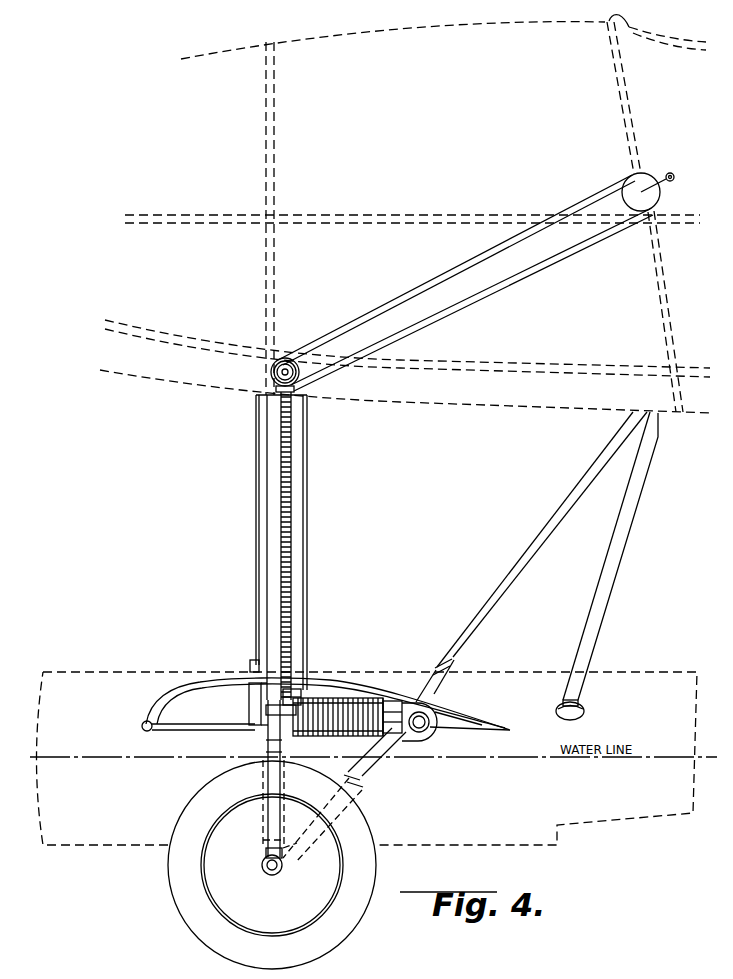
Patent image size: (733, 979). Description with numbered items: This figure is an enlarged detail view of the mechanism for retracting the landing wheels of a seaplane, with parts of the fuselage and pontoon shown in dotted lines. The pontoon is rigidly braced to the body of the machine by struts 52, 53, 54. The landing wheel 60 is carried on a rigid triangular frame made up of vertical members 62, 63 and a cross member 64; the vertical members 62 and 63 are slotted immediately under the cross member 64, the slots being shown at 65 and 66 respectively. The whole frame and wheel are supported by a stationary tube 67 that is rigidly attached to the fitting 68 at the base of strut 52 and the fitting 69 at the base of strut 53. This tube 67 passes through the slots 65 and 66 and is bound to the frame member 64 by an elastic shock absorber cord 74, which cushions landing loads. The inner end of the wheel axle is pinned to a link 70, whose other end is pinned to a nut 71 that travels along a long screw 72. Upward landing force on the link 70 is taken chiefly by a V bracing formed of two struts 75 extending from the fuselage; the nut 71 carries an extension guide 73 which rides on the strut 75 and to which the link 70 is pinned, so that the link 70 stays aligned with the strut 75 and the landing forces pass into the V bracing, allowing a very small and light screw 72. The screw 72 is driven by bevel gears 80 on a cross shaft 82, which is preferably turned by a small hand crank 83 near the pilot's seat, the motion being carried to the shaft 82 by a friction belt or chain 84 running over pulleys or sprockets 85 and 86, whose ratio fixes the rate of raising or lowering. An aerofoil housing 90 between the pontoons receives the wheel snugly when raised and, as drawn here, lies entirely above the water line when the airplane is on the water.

The strut 52 is at (253, 653).
The strut 53 is at (556, 512).
The strut 54 is at (630, 512).
The landing wheel 60 is at (175, 885).
The vertical member 62 is at (284, 783).
The vertical member 63 is at (337, 802).
The cross member 64 is at (393, 702).
The slot 65 is at (277, 752).
The slot 66 is at (380, 744).
The stationary tube 67 is at (340, 730).
The fitting 68 is at (249, 702).
The fitting 69 is at (436, 690).
The link 70 is at (265, 792).
The nut 71 is at (292, 698).
The screw 72 is at (287, 512).
The extension guide 73 is at (284, 689).
The elastic shock absorber cord 74 is at (308, 702).
The strut 75 is at (272, 535).
The bevel gears 80 is at (273, 378).
The cross shaft 82 is at (300, 376).
The hand crank 83 is at (674, 180).
The friction belt or chain 84 is at (557, 258).
The pulley or sprocket 85 is at (631, 192).
The pulley or sprocket 86 is at (288, 357).
The aerofoil housing 90 is at (177, 692).